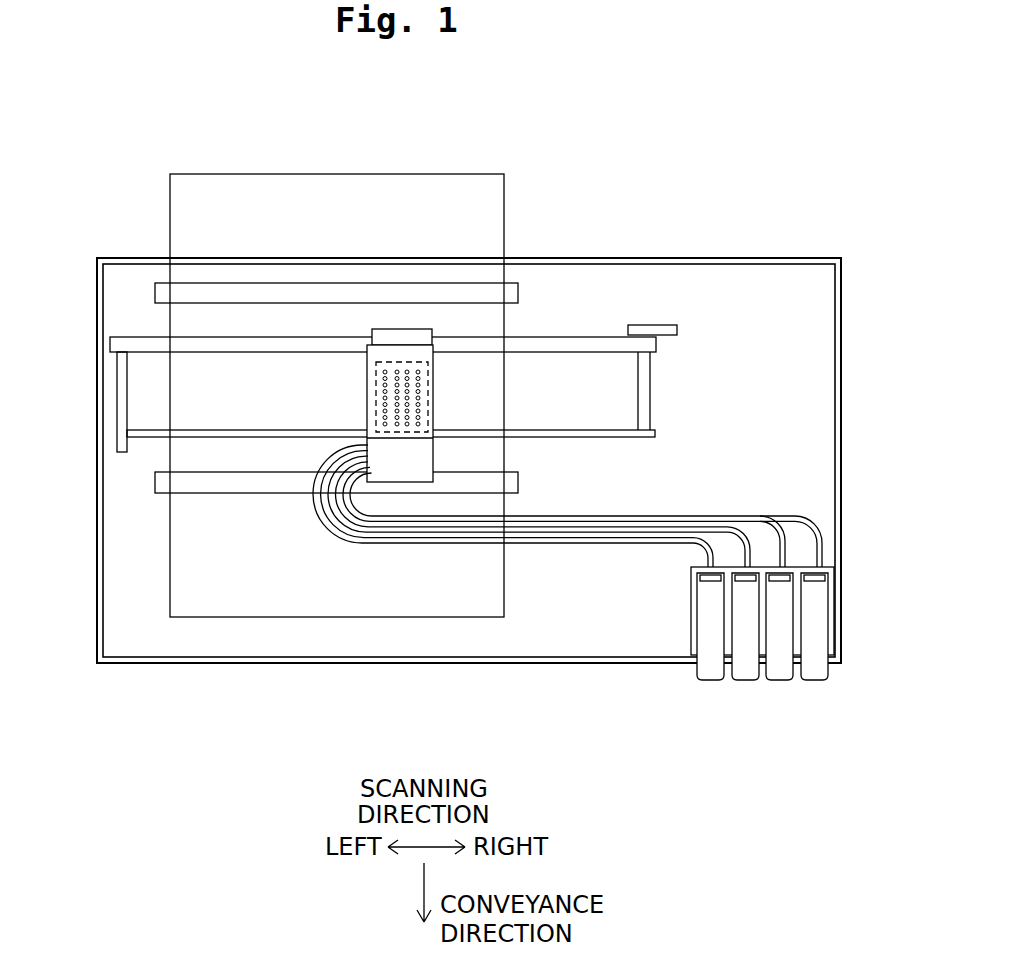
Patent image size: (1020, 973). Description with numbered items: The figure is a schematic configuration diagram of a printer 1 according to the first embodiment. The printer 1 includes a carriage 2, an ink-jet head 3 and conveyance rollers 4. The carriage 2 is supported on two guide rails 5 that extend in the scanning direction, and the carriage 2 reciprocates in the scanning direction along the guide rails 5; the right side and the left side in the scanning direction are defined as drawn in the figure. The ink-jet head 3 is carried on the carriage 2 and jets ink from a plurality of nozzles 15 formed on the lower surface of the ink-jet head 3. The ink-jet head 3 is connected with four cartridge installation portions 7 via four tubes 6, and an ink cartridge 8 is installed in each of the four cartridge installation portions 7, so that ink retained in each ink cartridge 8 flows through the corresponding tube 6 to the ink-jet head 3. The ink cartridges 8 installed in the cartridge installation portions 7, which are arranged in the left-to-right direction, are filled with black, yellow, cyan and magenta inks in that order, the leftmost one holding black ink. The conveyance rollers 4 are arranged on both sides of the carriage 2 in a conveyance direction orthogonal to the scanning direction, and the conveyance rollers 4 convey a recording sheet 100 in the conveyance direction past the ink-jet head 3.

The printer 1 is at (840, 246).
The carriage 2 is at (367, 367).
The ink-jet head 3 is at (375, 415).
The conveyance rollers 4 is at (163, 295).
The guide rails 5 is at (133, 347).
The tubes 6 is at (588, 519).
The cartridge installation portions 7 is at (723, 567).
The ink cartridge 8 is at (712, 672).
The nozzles 15 is at (428, 383).
The recording sheet 100 is at (485, 220).